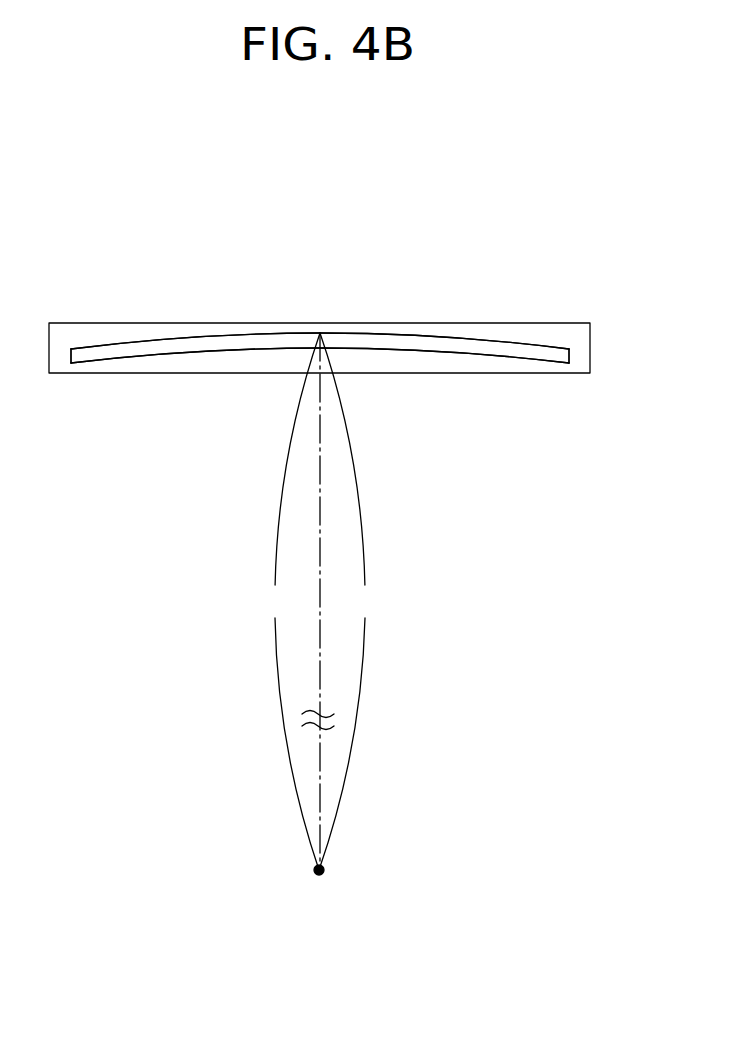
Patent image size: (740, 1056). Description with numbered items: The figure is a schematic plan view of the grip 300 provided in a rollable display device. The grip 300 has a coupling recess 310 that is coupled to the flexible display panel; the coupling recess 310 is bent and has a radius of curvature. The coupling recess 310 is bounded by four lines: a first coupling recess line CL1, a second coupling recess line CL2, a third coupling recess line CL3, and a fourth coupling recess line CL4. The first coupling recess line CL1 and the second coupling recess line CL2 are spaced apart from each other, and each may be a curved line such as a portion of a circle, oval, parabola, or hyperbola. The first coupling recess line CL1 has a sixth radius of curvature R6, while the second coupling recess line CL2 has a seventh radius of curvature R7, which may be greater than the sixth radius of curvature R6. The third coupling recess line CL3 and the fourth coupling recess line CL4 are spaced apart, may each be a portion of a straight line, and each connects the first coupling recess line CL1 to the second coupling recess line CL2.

The grip 300 is at (493, 251).
The coupling recess 310 is at (210, 338).
The first coupling recess line CL1 is at (420, 350).
The second coupling recess line CL2 is at (360, 339).
The third coupling recess line CL3 is at (73, 350).
The fourth coupling recess line CL4 is at (568, 356).
The sixth radius of curvature R6 is at (349, 601).
The seventh radius of curvature R7 is at (290, 601).